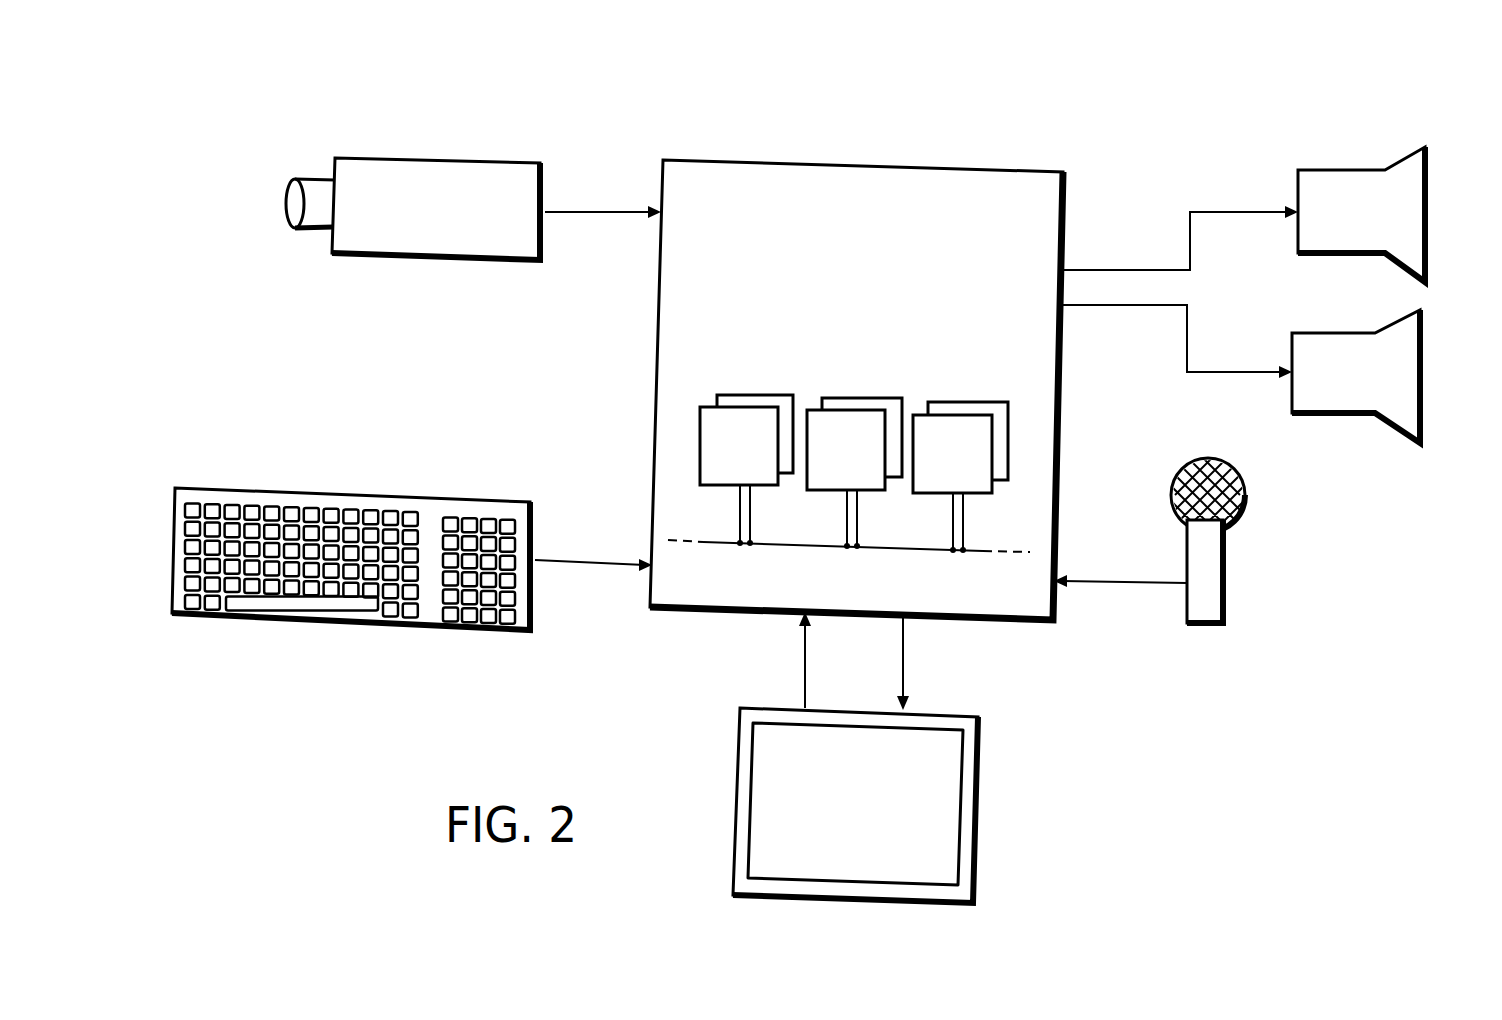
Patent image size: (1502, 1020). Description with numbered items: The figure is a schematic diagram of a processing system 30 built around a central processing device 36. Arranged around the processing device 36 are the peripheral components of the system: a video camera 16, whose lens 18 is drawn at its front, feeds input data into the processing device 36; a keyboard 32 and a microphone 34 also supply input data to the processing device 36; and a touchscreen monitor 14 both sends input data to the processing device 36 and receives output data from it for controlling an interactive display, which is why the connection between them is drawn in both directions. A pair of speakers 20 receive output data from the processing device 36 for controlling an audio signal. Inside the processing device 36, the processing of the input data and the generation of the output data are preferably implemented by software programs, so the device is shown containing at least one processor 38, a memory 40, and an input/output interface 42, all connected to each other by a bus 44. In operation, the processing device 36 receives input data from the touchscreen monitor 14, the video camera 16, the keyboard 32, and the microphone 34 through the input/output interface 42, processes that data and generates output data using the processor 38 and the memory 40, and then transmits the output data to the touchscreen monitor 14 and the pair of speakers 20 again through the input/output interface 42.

The touchscreen monitor 14 is at (950, 765).
The video camera 16 is at (492, 178).
The camera lens 18 is at (321, 178).
The pair of speakers 20 is at (1400, 200).
The processing system 30 is at (1205, 120).
The keyboard 32 is at (430, 612).
The microphone 34 is at (1207, 550).
The processing device 36 is at (713, 185).
The processor 38 is at (731, 407).
The memory 40 is at (846, 410).
The input/output interface 42 is at (952, 415).
The bus 44 is at (787, 548).